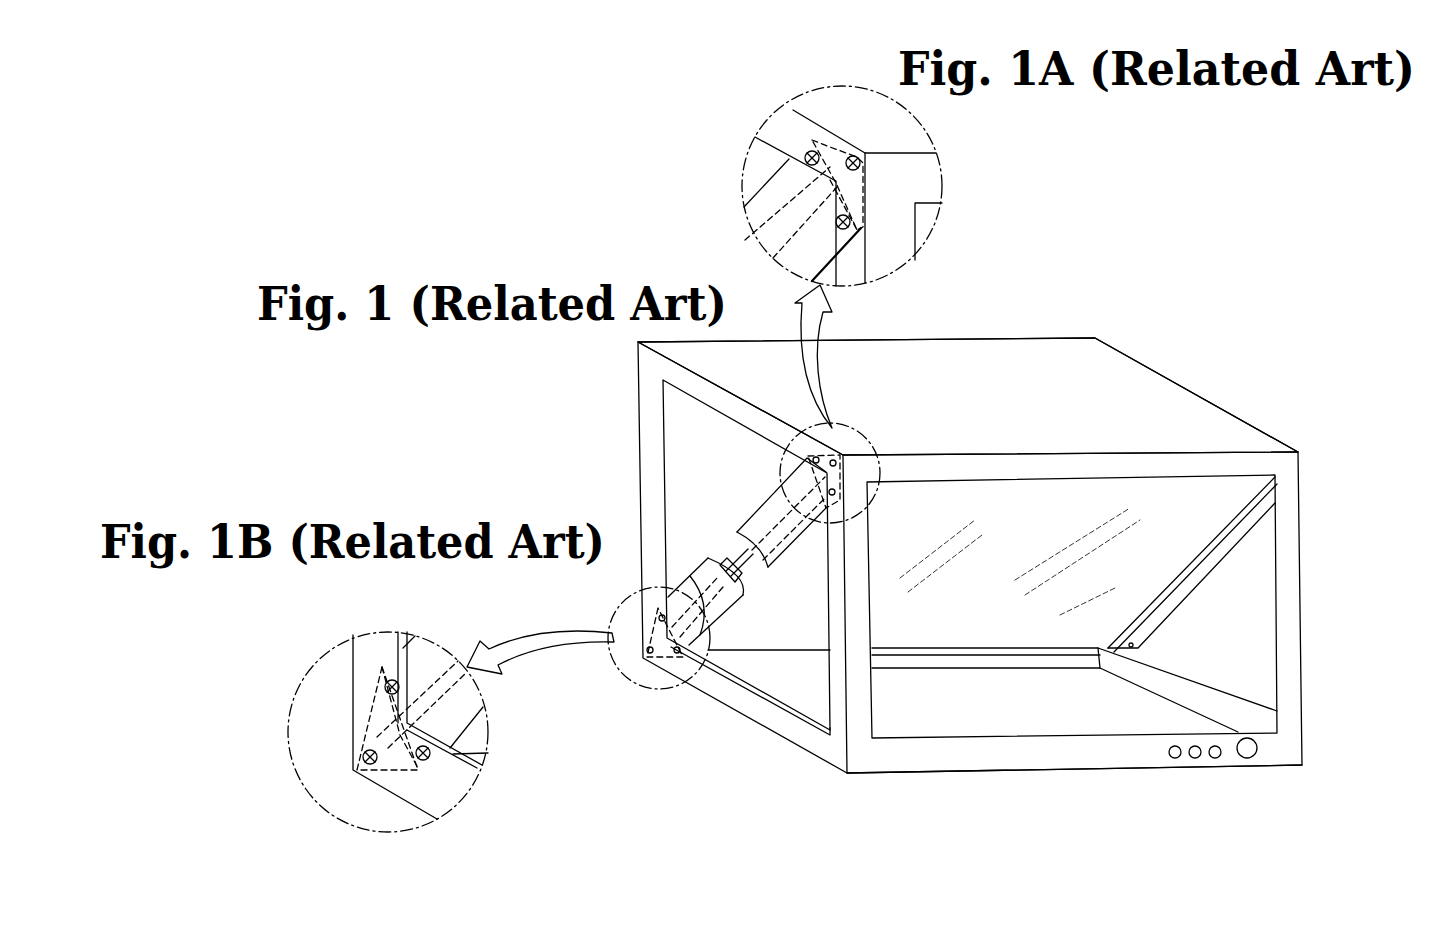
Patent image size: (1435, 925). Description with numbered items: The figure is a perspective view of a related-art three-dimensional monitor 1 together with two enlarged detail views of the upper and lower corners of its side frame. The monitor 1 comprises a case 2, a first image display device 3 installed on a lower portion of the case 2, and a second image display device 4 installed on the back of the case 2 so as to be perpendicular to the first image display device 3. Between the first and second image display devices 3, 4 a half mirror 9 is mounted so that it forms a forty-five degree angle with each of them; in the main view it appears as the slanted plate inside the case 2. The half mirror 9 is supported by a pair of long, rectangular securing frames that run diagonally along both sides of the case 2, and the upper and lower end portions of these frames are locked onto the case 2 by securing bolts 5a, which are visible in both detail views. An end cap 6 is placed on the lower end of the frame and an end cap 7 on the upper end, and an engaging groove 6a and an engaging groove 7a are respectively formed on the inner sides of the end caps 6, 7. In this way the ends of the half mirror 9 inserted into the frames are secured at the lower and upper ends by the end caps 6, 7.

In FIG. 1, the 3D monitor 1 is at (1098, 247).
In FIG. 1, the case 2 is at (1147, 397).
In FIG. 1, the first image display device 3 is at (1085, 707).
In FIG. 1, the second image display device 4 is at (692, 463).
In FIG. 1A, the securing bolt 5a is at (810, 157).
In FIG. 1B, the securing bolt 5a is at (367, 750).
In FIG. 1B, the end cap 6 is at (380, 722).
In FIG. 1B, the engaging groove 6a is at (413, 767).
In FIG. 1A, the end cap 7 is at (833, 157).
In FIG. 1A, the engaging groove 7a is at (843, 173).
In FIG. 1, the half mirror 9 is at (978, 608).